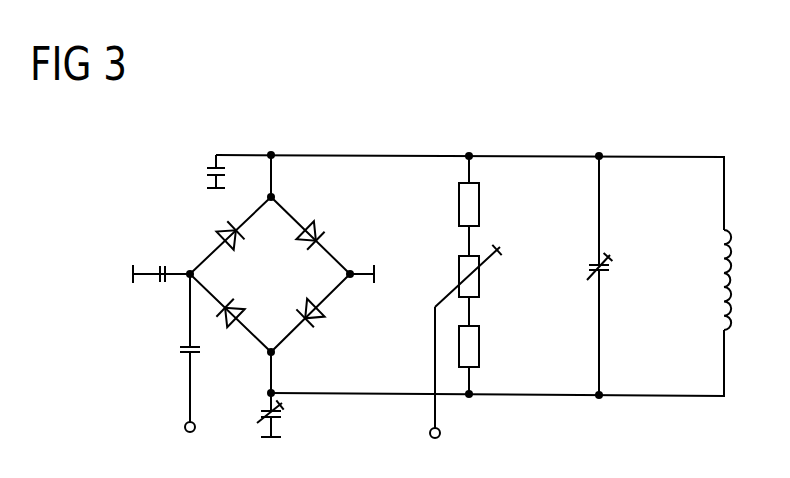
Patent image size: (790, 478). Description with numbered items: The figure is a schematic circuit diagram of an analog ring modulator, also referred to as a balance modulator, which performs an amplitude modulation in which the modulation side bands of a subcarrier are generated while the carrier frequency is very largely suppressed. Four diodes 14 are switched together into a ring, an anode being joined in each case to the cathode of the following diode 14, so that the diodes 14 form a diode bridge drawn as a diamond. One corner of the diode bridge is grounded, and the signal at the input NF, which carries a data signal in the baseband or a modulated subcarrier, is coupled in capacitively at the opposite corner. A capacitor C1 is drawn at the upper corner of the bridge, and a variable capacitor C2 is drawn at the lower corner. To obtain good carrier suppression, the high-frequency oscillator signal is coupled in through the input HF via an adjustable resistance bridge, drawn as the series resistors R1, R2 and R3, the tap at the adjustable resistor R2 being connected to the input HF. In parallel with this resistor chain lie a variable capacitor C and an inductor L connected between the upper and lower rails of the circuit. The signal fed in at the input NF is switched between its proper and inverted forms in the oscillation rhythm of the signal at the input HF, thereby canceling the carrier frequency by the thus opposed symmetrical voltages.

The diode 14 is at (213, 233).
The capacitor C1 is at (195, 172).
The variable capacitor C2 is at (289, 415).
The resistor R1 is at (487, 198).
The variable resistor R2 is at (475, 276).
The resistor R3 is at (487, 352).
The variable capacitor C is at (612, 275).
The inductor L is at (740, 280).
The input NF is at (187, 371).
The input HF is at (434, 390).